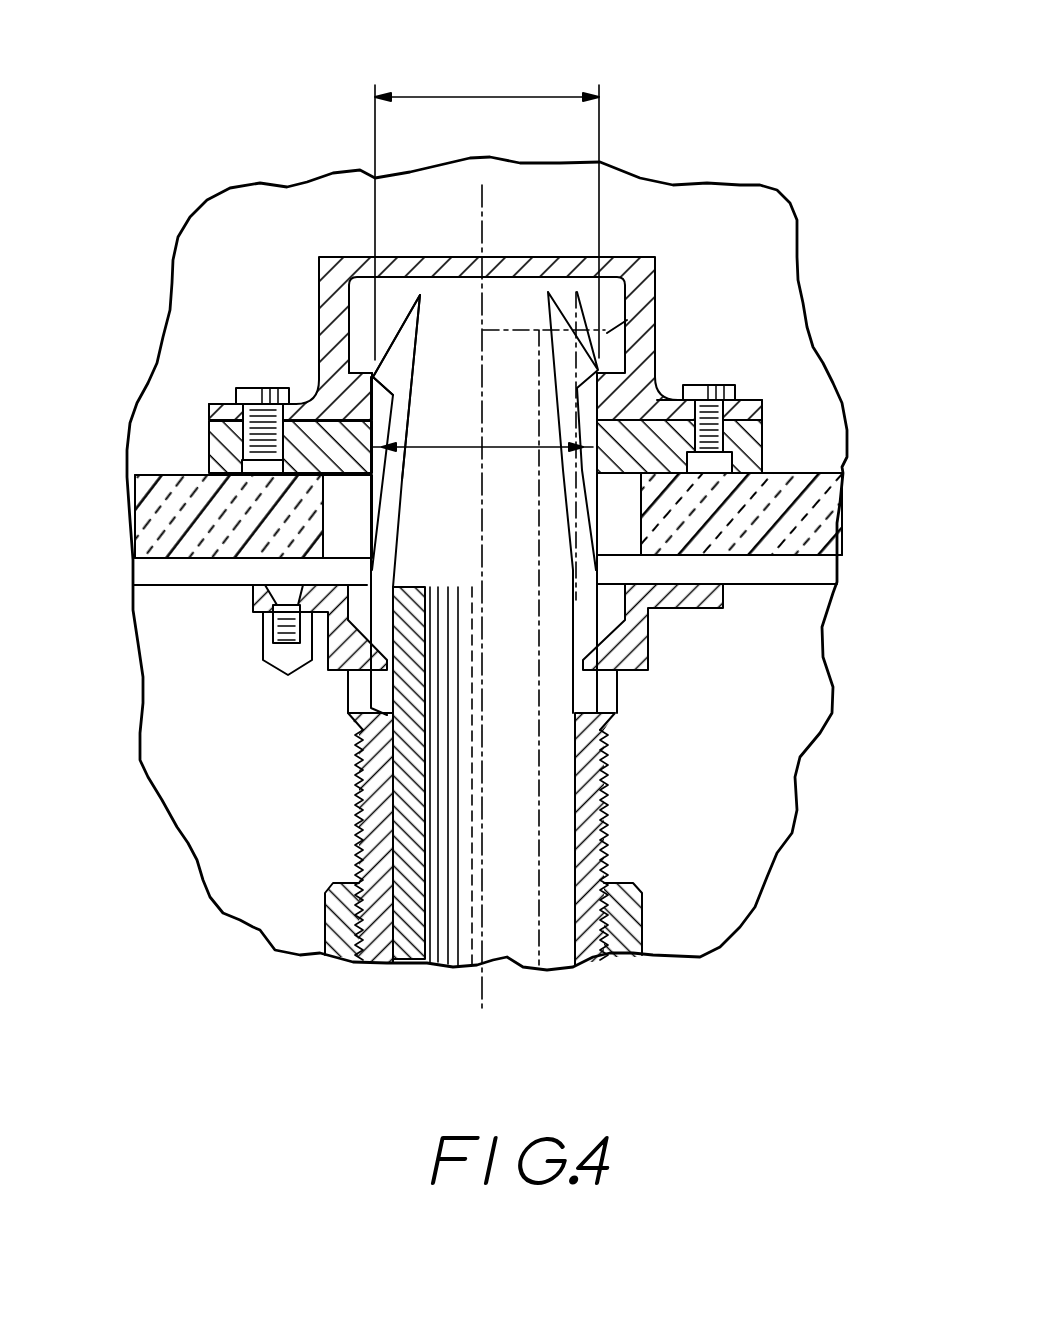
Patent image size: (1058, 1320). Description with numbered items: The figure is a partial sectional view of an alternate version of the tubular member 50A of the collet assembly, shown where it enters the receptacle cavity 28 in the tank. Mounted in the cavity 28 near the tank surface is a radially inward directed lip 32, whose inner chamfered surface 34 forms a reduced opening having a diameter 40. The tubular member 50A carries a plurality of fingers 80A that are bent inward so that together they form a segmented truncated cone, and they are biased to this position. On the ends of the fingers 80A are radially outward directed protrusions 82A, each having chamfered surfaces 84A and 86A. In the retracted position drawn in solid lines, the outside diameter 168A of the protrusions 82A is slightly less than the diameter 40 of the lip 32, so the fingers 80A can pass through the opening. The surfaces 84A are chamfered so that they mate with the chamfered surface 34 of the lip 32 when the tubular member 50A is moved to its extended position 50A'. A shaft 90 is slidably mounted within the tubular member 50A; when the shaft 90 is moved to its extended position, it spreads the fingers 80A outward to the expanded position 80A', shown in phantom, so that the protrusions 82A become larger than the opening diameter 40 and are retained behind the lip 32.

The outside diameter of the protrusions 168A is at (483, 97).
The cavity 28 is at (360, 279).
The inner chamfered surface 34 is at (350, 378).
The radially outward directed protrusions 82A is at (655, 370).
The chamfered surfaces 84A is at (305, 416).
The radially inward directed lip 32 is at (388, 455).
The diameter of the opening 40 is at (493, 448).
The fingers 80A is at (441, 503).
The chamfered surface 86A is at (403, 323).
The expanded position of the fingers 80A' is at (690, 602).
The shaft 90 is at (408, 968).
The extended position of the tubular member 50A' is at (626, 839).
The tubular member 50A is at (599, 902).